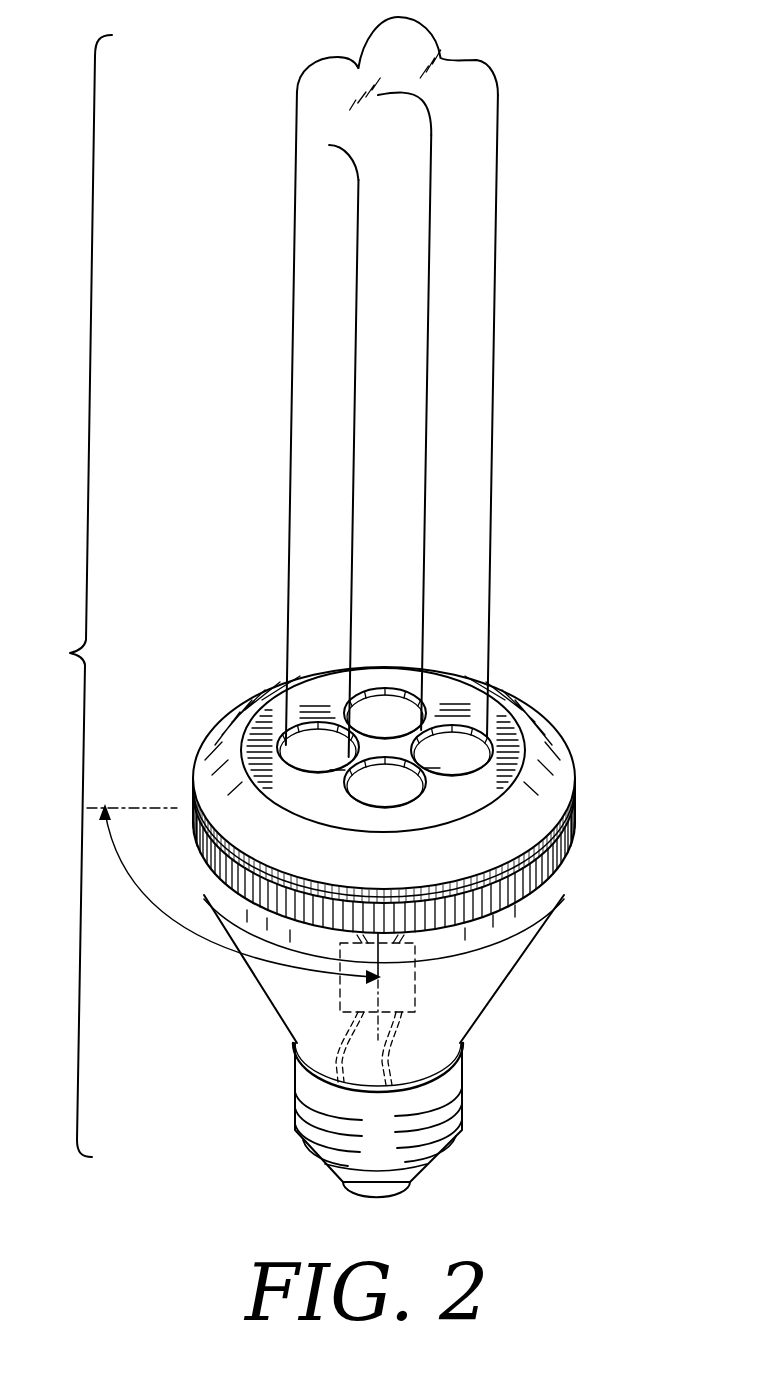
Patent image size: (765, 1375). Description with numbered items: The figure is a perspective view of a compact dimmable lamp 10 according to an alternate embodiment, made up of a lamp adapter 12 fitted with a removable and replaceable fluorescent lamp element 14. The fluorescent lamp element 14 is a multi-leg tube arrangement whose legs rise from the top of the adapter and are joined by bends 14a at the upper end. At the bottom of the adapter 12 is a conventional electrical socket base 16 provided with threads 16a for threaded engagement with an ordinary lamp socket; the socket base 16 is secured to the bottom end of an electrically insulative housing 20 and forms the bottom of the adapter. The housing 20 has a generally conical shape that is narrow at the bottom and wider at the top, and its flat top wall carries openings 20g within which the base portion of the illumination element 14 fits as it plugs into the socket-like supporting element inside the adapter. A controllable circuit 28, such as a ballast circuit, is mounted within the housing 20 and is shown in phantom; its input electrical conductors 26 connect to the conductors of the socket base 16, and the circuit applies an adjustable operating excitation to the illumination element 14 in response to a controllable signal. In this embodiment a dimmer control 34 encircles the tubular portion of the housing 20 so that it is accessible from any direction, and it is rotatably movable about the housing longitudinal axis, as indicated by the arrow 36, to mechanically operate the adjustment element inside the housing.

The compact dimmable lamp 10 is at (79, 596).
The lamp adapter 12 is at (258, 683).
The fluorescent lamp element 14 is at (540, 342).
The tube bends 14a is at (330, 63).
The electrical socket base 16 is at (293, 1088).
The threads 16a is at (325, 1150).
The electrically insulative housing 20 is at (265, 1003).
The openings 20g is at (305, 748).
The input electrical conductors 26 is at (390, 1057).
The controllable circuit 28 is at (408, 993).
The dimmer control 34 is at (578, 848).
The arrow 36 is at (173, 922).